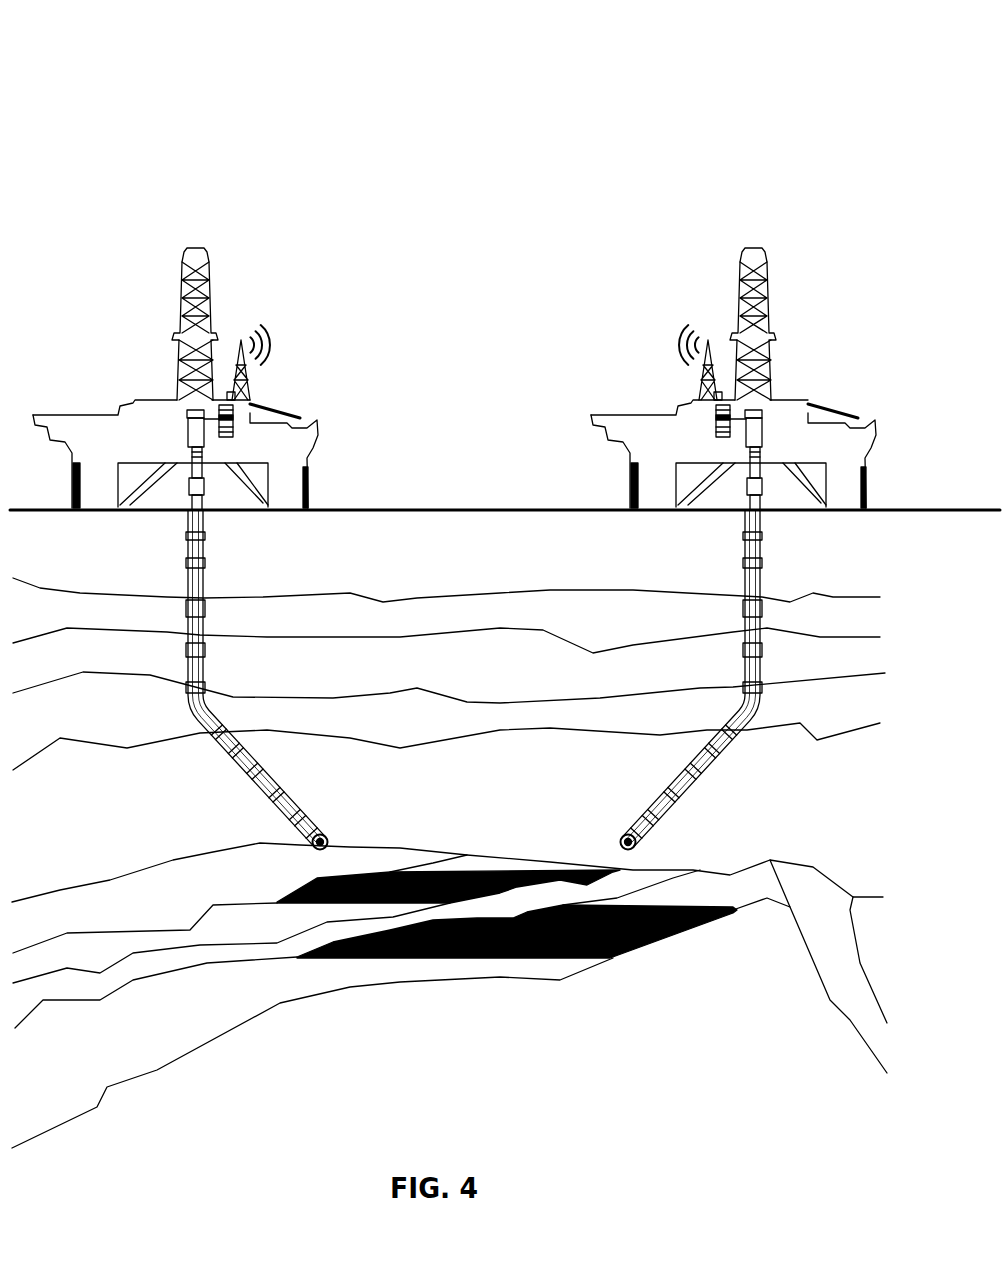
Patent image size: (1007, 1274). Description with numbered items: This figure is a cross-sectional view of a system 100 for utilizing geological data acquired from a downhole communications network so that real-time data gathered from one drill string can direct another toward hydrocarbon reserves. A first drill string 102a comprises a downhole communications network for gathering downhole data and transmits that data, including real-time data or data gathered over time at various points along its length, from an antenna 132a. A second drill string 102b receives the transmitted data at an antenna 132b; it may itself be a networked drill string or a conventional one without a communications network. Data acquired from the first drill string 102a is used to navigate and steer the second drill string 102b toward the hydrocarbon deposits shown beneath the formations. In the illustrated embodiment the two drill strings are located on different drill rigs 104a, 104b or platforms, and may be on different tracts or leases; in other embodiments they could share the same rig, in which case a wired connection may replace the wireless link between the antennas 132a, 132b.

The system 100 is at (126, 77).
The first drill string 102a is at (276, 673).
The second drill string 102b is at (685, 685).
The first drill rig 104a is at (137, 403).
The second drill rig 104b is at (797, 403).
The antenna 132a is at (246, 373).
The antenna 132b is at (702, 375).